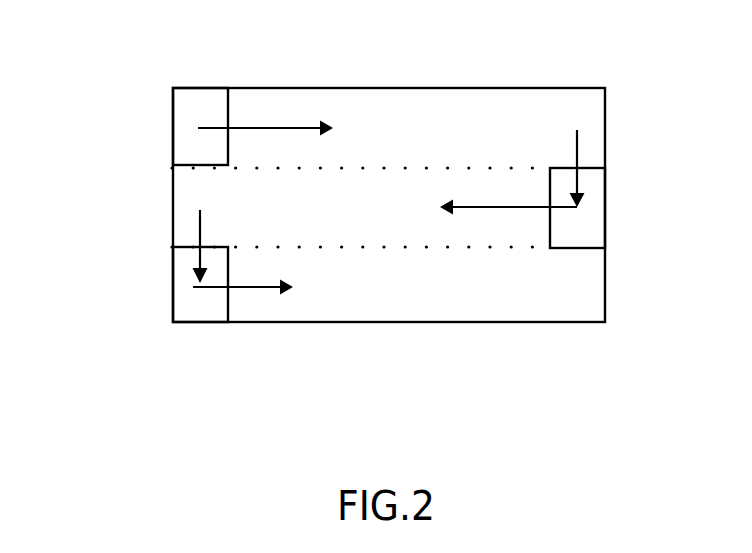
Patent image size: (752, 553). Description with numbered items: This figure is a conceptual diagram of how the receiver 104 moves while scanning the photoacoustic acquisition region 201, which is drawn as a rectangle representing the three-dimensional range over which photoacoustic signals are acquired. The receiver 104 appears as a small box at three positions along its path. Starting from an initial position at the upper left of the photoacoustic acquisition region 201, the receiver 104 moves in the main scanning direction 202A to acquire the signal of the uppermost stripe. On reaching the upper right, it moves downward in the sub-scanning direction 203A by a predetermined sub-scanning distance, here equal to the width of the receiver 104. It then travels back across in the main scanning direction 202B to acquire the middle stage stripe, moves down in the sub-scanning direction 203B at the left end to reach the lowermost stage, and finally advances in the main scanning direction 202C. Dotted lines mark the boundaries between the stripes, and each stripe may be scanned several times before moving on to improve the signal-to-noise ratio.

The photoacoustic acquisition region 201 is at (250, 88).
The receiver 104 is at (180, 118).
The main scanning direction 202A is at (306, 125).
The main scanning direction 202B is at (507, 207).
The main scanning direction 202C is at (262, 287).
The sub-scanning direction 203A is at (577, 148).
The sub-scanning direction 203B is at (201, 238).